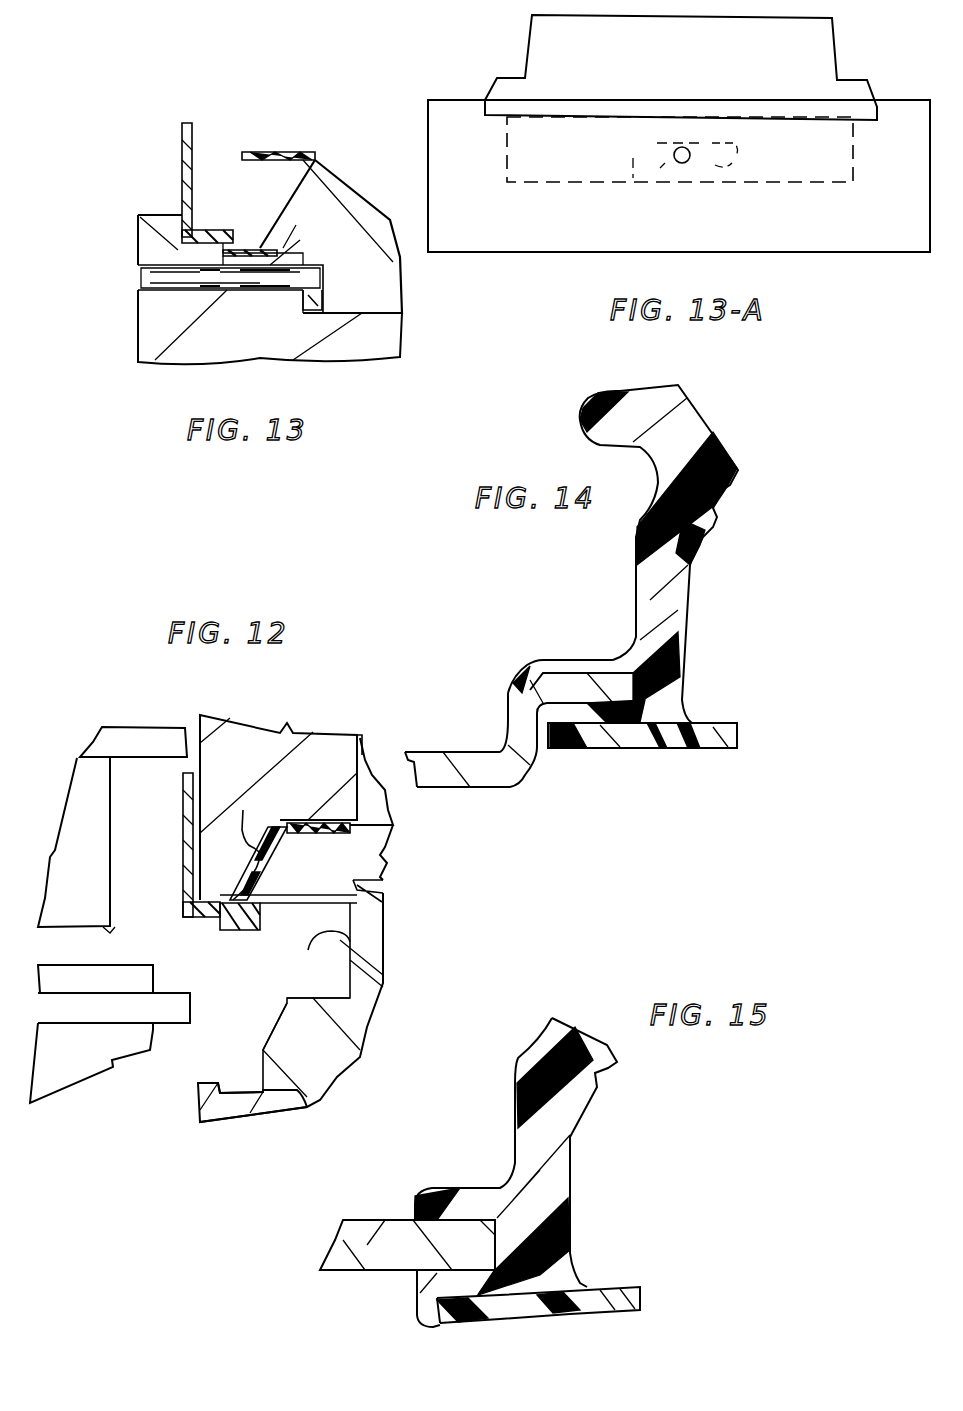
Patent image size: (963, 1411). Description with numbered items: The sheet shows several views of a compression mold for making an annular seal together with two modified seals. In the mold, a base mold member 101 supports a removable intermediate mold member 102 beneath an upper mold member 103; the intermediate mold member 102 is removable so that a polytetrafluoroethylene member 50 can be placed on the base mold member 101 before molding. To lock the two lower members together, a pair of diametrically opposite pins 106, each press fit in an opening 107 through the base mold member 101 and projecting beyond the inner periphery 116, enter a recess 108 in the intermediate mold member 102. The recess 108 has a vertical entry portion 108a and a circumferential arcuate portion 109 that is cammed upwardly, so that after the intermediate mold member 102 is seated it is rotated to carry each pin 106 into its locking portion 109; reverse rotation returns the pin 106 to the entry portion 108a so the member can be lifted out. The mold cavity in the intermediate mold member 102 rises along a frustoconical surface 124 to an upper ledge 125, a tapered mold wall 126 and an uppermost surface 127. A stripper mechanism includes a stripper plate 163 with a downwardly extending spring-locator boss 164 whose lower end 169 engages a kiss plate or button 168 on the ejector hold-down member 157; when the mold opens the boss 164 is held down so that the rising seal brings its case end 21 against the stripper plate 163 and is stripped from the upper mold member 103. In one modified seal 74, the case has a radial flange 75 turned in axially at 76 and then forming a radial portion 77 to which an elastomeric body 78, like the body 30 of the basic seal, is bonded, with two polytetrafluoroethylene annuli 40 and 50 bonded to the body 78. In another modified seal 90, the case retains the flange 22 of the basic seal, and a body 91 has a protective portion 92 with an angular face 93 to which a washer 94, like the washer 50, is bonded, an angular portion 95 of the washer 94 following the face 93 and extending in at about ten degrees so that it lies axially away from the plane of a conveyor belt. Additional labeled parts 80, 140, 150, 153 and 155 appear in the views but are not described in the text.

In FIG. 13, the case end 21 is at (182, 142).
In FIG. 12, the case end 21 is at (182, 800).
In FIG. 13, the flange 22 is at (200, 230).
In FIG. 12, the flange 22 is at (193, 918).
In FIG. 15, the flange 22 is at (367, 1228).
In FIG. 12, the body 30 is at (245, 825).
In FIG. 14, the polytetrafluoroethylene annulus 40 is at (713, 513).
In FIG. 13, the polytetrafluoroethylene member 50 is at (263, 247).
In FIG. 14, the polytetrafluoroethylene member 50 is at (710, 737).
In FIG. 12, the polytetrafluoroethylene member 50 is at (262, 932).
In FIG. 14, the seal 74 is at (519, 712).
In FIG. 14, the radial flange 75 is at (470, 780).
In FIG. 14, the axially turned-in portion 76 is at (507, 753).
In FIG. 14, the radial portion 77 is at (573, 692).
In FIG. 14, the elastomeric body 78 is at (610, 648).
In FIG. 13, the spring strip 80 is at (255, 160).
In FIG. 12, the spring strip 80 is at (285, 838).
In FIG. 15, the seal 90 is at (461, 1191).
In FIG. 15, the body 91 is at (493, 1185).
In FIG. 15, the protective portion 92 is at (420, 1313).
In FIG. 15, the angular face 93 is at (448, 1325).
In FIG. 15, the washer 94 is at (505, 1320).
In FIG. 15, the angular portion 95 is at (613, 1312).
In FIG. 13, the base mold member 101 is at (270, 355).
In FIG. 13A, the base mold member 101 is at (838, 222).
In FIG. 13, the intermediate mold member 102 is at (330, 176).
In FIG. 13A, the intermediate mold member 102 is at (710, 67).
In FIG. 12, the intermediate mold member 102 is at (383, 945).
In FIG. 12, the upper mold member 103 is at (258, 740).
In FIG. 13, the pin 106 is at (298, 288).
In FIG. 13A, the pin 106 is at (683, 147).
In FIG. 13, the opening 107 is at (257, 290).
In FIG. 13, the recess 108 is at (325, 280).
In FIG. 13A, the recess 108 is at (640, 155).
In FIG. 13A, the vertical entry portion 108a is at (645, 177).
In FIG. 13A, the arcuate portion 109 is at (735, 162).
In FIG. 13, the inner periphery 116 is at (307, 257).
In FIG. 12, the frustoconical surface 124 is at (280, 1018).
In FIG. 12, the upper ledge 125 is at (320, 998).
In FIG. 12, the tapered mold wall 126 is at (329, 949).
In FIG. 12, the uppermost surface 127 is at (383, 857).
In FIG. 12, the edge 140 is at (362, 750).
In FIG. 12, the lip 150 is at (232, 1108).
In FIG. 12, the base member 153 is at (102, 1062).
In FIG. 12, the plate 155 is at (190, 1024).
In FIG. 12, the ejector hold-down member 157 is at (133, 992).
In FIG. 12, the stripper plate 163 is at (140, 733).
In FIG. 12, the spring-locator boss 164 is at (100, 862).
In FIG. 12, the kiss plate 168 is at (60, 963).
In FIG. 12, the lower end 169 is at (128, 931).